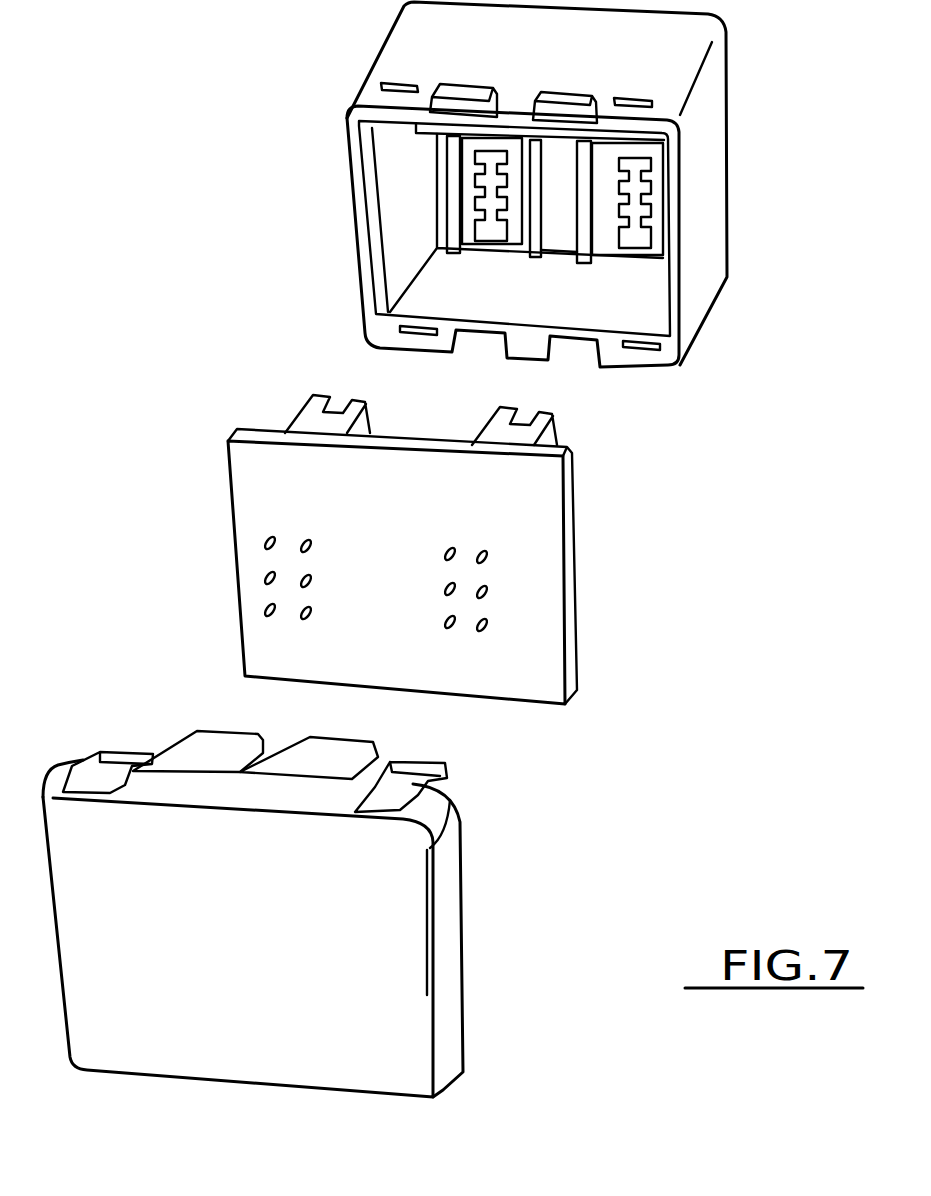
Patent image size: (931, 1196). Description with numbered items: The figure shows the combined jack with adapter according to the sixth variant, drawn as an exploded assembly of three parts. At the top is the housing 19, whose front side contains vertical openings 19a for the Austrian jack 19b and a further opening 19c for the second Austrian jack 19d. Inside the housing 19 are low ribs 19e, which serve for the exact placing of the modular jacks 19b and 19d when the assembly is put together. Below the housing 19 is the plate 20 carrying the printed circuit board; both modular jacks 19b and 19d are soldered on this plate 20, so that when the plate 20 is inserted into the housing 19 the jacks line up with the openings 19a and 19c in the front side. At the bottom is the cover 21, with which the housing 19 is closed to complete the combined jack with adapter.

The housing 19 is at (705, 288).
The vertical openings 19a is at (477, 180).
The Austrian jack 19b is at (313, 414).
The opening 19c is at (643, 201).
The Austrian jack 19d is at (550, 420).
The low ribs 19e is at (530, 160).
The plate 20 is at (547, 607).
The cover 21 is at (403, 943).